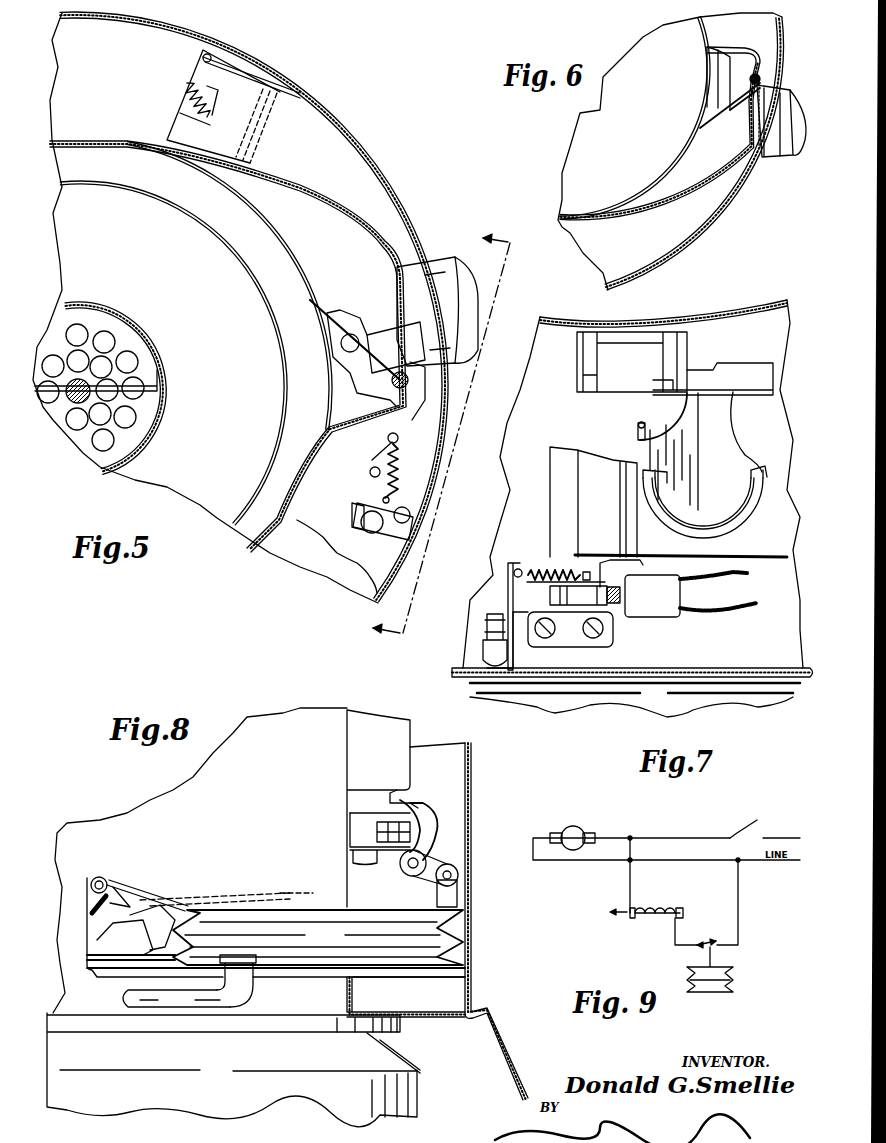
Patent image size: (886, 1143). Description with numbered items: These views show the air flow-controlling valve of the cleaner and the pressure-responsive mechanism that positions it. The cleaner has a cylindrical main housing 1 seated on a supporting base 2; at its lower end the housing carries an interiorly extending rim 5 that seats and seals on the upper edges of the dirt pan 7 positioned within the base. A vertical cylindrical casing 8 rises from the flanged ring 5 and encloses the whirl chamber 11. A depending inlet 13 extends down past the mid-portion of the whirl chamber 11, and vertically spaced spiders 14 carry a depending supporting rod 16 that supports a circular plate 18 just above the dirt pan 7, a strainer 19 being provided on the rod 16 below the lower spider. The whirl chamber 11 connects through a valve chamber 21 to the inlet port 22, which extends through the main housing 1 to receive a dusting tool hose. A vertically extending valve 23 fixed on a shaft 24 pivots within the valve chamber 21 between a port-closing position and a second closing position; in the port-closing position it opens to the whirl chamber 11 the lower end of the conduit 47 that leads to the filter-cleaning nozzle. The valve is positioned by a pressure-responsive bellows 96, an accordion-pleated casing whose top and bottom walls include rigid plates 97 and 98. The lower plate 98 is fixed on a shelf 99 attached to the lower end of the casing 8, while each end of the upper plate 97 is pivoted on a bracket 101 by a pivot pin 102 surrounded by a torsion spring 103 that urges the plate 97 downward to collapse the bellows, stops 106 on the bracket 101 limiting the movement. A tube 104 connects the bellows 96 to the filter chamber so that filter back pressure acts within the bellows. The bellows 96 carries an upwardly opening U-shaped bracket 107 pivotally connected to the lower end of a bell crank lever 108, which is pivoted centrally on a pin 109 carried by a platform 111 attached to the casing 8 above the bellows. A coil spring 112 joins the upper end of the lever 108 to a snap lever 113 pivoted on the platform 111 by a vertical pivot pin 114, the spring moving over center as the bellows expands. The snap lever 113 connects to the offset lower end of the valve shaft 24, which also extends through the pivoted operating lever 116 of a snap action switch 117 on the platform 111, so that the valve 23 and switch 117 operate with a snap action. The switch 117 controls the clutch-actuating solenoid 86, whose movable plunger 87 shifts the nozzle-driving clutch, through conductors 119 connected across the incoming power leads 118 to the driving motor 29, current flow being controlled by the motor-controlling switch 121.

In FIG. 5, the main housing 1 is at (370, 160).
In FIG. 6, the main housing 1 is at (722, 228).
In FIG. 8, the main housing 1 is at (475, 805).
In FIG. 8, the supporting base 2 is at (497, 1043).
In FIG. 5, the interiorly extending rim 5 is at (160, 55).
In FIG. 8, the interiorly extending rim 5 is at (407, 1014).
In FIG. 5, the dirt container or pan 7 is at (430, 433).
In FIG. 8, the dirt container or pan 7 is at (233, 1070).
In FIG. 5, the vertical cylindrical casing 8 is at (80, 140).
In FIG. 6, the vertical cylindrical casing 8 is at (568, 225).
In FIG. 7, the vertical cylindrical casing 8 is at (775, 638).
In FIG. 8, the vertical cylindrical casing 8 is at (276, 843).
In FIG. 5, the whirl chamber 11 is at (131, 230).
In FIG. 6, the whirl chamber 11 is at (635, 118).
In FIG. 7, the whirl chamber 11 is at (613, 320).
In FIG. 5, the depending inlet 13 is at (123, 313).
In FIG. 5, the spiders 14 is at (160, 426).
In FIG. 5, the supporting rod 16 is at (58, 407).
In FIG. 5, the circular plate 18 is at (258, 495).
In FIG. 5, the strainer 19 is at (176, 320).
In FIG. 5, the valve chamber 21 is at (229, 286).
In FIG. 6, the valve chamber 21 is at (660, 133).
In FIG. 5, the inlet port 22 is at (437, 311).
In FIG. 6, the inlet port 22 is at (797, 100).
In FIG. 7, the inlet port 22 is at (737, 520).
In FIG. 5, the valve 23 is at (325, 310).
In FIG. 6, the valve 23 is at (742, 100).
In FIG. 7, the valve 23 is at (673, 433).
In FIG. 5, the shaft 24 is at (392, 378).
In FIG. 6, the shaft 24 is at (755, 72).
In FIG. 7, the shaft 24 is at (637, 428).
In FIG. 8, the shaft 24 is at (411, 796).
In FIG. 9, the driving motor 29 is at (570, 826).
In FIG. 6, the conduit 47 is at (718, 77).
In FIG. 7, the conduit 47 is at (620, 341).
In FIG. 9, the electrical solenoid 86 is at (657, 908).
In FIG. 9, the movable plunger 87 is at (685, 912).
In FIG. 7, the pressure-responsive bellows 96 is at (635, 700).
In FIG. 8, the pressure-responsive bellows 96 is at (318, 937).
In FIG. 9, the pressure-responsive bellows 96 is at (732, 978).
In FIG. 5, the upper plate 97 is at (306, 168).
In FIG. 7, the upper plate 97 is at (657, 668).
In FIG. 8, the upper plate 97 is at (330, 907).
In FIG. 8, the lower plate 98 is at (197, 963).
In FIG. 8, the shelf 99 is at (117, 970).
In FIG. 8, the bracket 101 is at (97, 927).
In FIG. 5, the pivot pin 102 is at (213, 55).
In FIG. 8, the pivot pin 102 is at (100, 877).
In FIG. 5, the torsion spring 103 is at (210, 108).
In FIG. 8, the torsion spring 103 is at (112, 882).
In FIG. 8, the tube or conduit 104 is at (189, 982).
In FIG. 5, the stops 106 is at (262, 75).
In FIG. 8, the stops 106 is at (160, 895).
In FIG. 5, the U-shaped bracket 107 is at (405, 508).
In FIG. 7, the U-shaped bracket 107 is at (515, 655).
In FIG. 8, the U-shaped bracket 107 is at (457, 893).
In FIG. 5, the bell crank lever 108 is at (376, 533).
In FIG. 7, the bell crank lever 108 is at (507, 568).
In FIG. 8, the bell crank lever 108 is at (436, 843).
In FIG. 5, the pin 109 is at (352, 513).
In FIG. 7, the pin 109 is at (505, 612).
In FIG. 8, the pin 109 is at (407, 872).
In FIG. 5, the platform 111 is at (349, 460).
In FIG. 7, the platform 111 is at (570, 629).
In FIG. 8, the platform 111 is at (380, 868).
In FIG. 5, the coil spring 112 is at (405, 463).
In FIG. 7, the coil spring 112 is at (543, 567).
In FIG. 5, the snap lever 113 is at (388, 438).
In FIG. 7, the snap lever 113 is at (578, 596).
In FIG. 5, the vertical pivot pin 114 is at (370, 473).
In FIG. 7, the vertical pivot pin 114 is at (550, 594).
In FIG. 8, the vertical pivot pin 114 is at (393, 833).
In FIG. 5, the operating lever 116 is at (383, 409).
In FIG. 7, the operating lever 116 is at (622, 597).
In FIG. 5, the snap action switch 117 is at (393, 347).
In FIG. 7, the snap action switch 117 is at (652, 596).
In FIG. 8, the snap action switch 117 is at (380, 827).
In FIG. 9, the snap action switch 117 is at (703, 945).
In FIG. 9, the incoming power leads 118 is at (667, 838).
In FIG. 7, the conductors 119 is at (707, 612).
In FIG. 9, the conductors 119 is at (630, 877).
In FIG. 9, the motor-controlling switch 121 is at (747, 832).